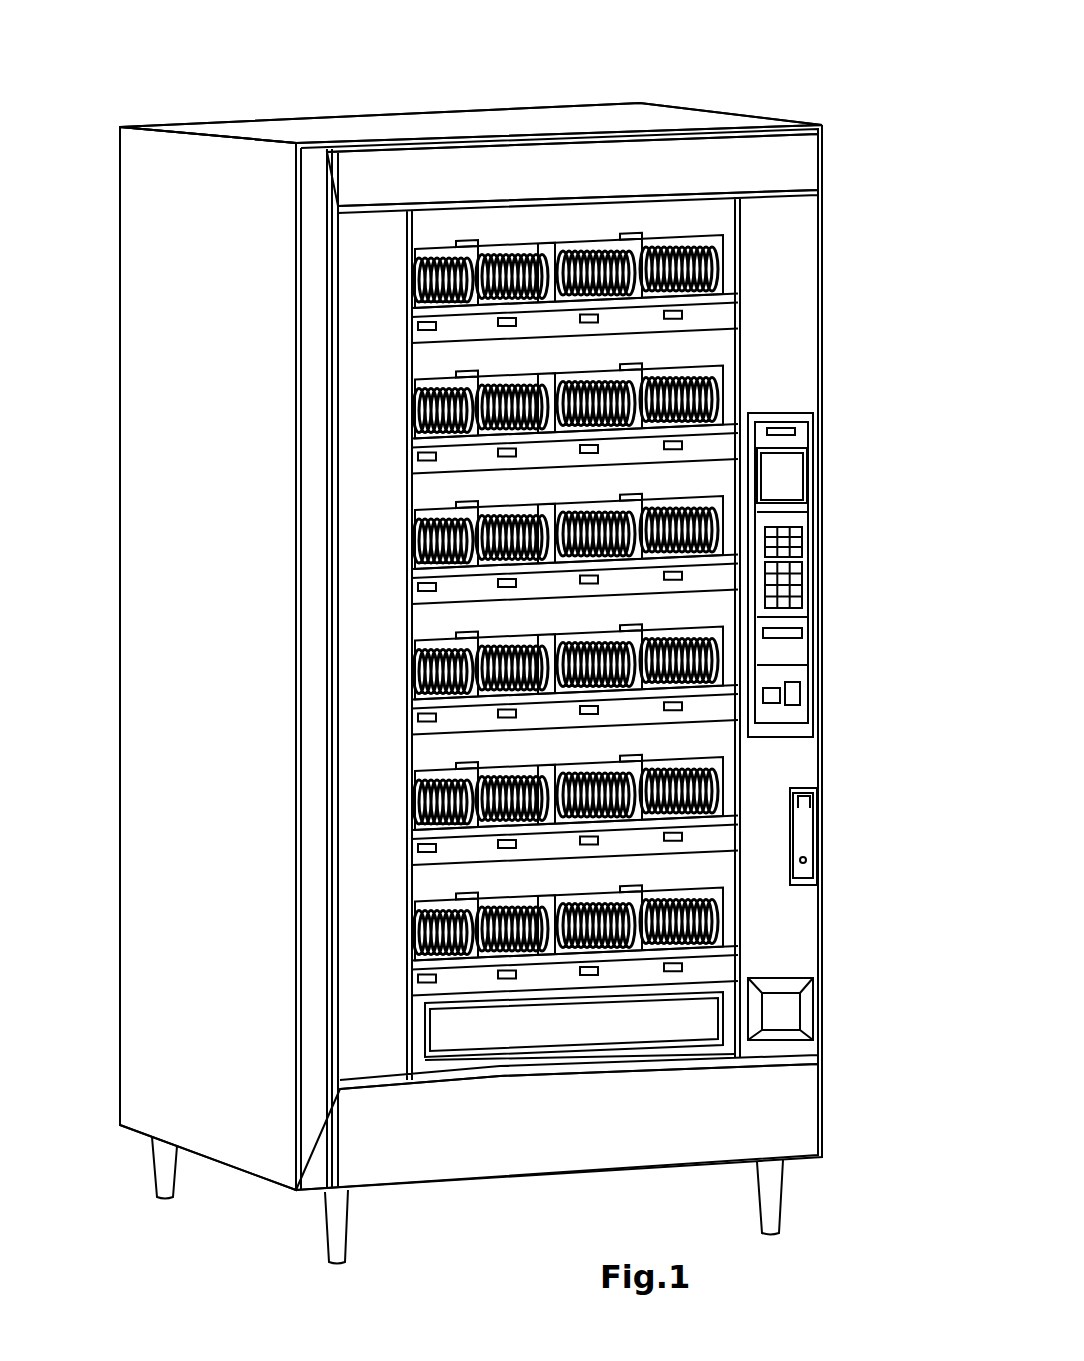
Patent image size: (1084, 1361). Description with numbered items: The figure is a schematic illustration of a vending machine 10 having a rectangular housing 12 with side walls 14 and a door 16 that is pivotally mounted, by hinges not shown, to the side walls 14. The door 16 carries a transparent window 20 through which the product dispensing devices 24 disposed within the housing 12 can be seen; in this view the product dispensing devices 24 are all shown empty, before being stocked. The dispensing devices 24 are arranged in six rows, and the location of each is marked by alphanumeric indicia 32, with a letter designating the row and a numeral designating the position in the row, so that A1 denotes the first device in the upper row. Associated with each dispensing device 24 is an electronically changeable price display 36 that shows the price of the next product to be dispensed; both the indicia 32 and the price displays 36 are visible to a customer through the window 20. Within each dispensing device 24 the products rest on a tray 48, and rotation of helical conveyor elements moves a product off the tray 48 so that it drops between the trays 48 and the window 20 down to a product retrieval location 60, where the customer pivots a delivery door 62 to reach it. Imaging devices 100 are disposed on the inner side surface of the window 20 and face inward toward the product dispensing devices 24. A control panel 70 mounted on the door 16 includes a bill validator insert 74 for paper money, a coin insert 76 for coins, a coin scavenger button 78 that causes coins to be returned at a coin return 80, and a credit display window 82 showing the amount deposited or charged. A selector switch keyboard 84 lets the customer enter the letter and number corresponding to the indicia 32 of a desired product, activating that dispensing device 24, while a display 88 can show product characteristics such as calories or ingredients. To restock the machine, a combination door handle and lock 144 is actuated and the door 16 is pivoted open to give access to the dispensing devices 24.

The vending machine 10 is at (826, 100).
The housing 12 is at (263, 132).
The side walls 14 is at (201, 498).
The door 16 is at (322, 682).
The transparent window 20 is at (533, 222).
The product dispensing devices 24 is at (437, 262).
The indicia 32 is at (450, 334).
The price display 36 is at (417, 326).
The tray 48 is at (720, 247).
The product retrieval location 60 is at (550, 1045).
The delivery door 62 is at (448, 1035).
The control panel 70 is at (810, 520).
The bill validator insert 74 is at (791, 632).
The coin insert 76 is at (800, 694).
The coin scavenger button 78 is at (776, 701).
The coin return 80 is at (788, 1011).
The credit display window 82 is at (794, 431).
The selector switch keyboard 84 is at (801, 583).
The display 88 is at (798, 470).
The imaging devices 100 is at (469, 241).
The combination door handle and lock 144 is at (801, 833).